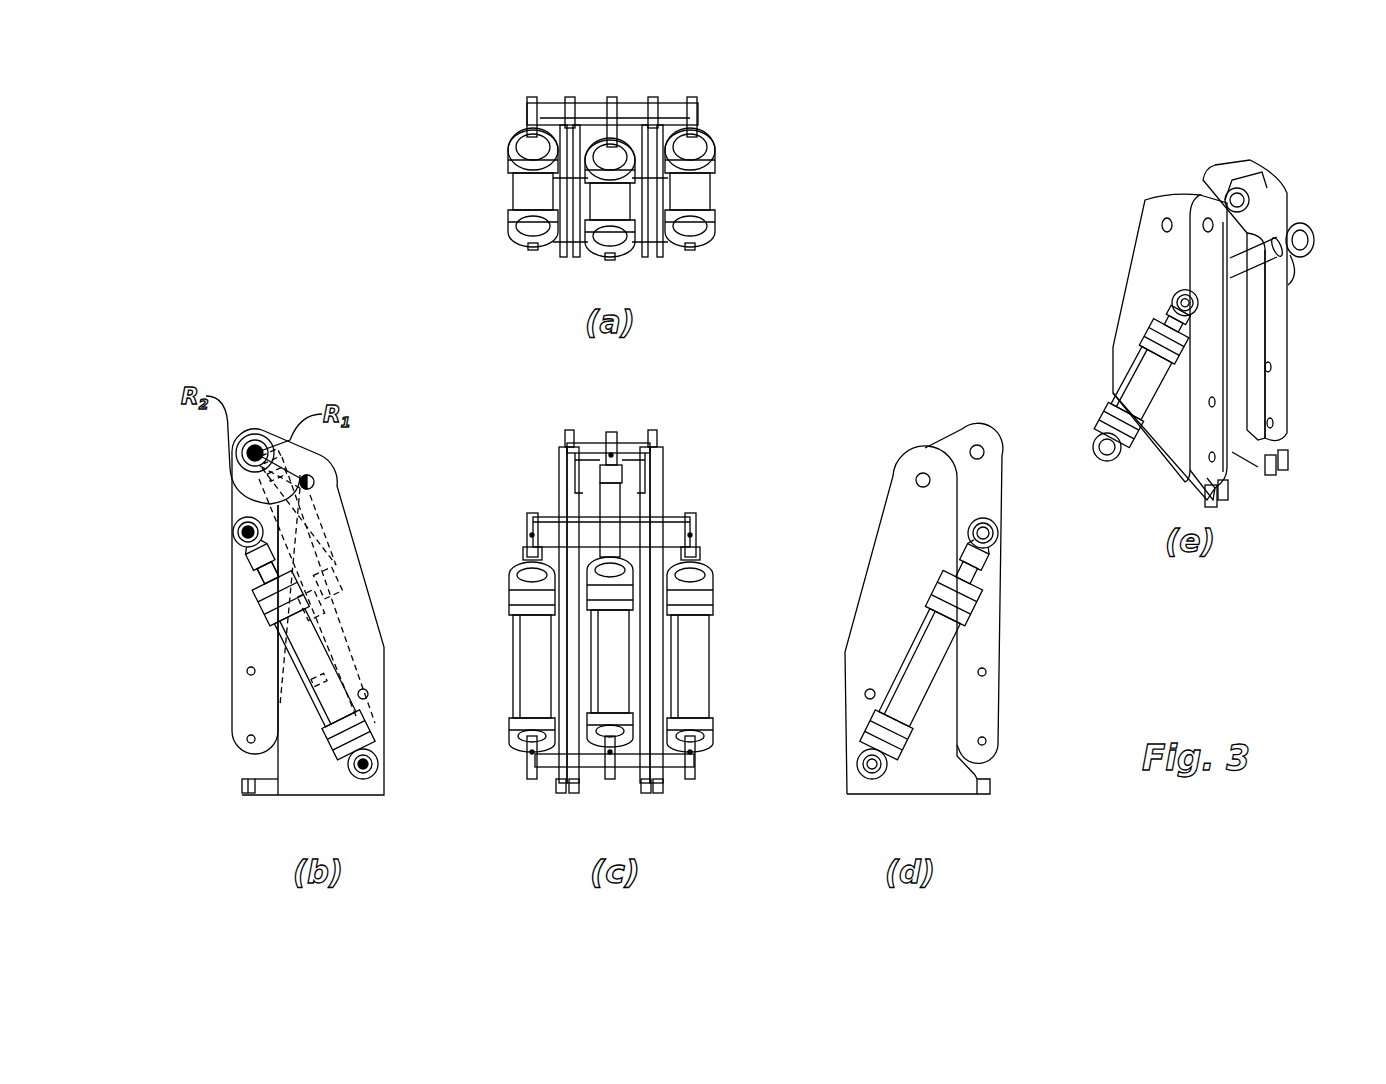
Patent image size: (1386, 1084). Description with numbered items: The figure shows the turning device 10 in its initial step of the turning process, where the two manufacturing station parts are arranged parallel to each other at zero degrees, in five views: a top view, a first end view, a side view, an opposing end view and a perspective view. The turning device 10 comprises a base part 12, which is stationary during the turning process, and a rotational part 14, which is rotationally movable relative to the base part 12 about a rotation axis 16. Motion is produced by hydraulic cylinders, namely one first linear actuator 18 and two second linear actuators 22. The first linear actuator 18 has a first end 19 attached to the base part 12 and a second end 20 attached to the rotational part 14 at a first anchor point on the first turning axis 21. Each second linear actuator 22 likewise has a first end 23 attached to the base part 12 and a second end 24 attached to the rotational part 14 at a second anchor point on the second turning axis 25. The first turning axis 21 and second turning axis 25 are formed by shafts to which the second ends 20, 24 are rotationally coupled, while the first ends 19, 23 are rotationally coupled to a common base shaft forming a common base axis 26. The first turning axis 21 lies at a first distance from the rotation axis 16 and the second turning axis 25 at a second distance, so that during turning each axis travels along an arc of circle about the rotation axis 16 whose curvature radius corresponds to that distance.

The turning device 10 is at (1073, 213).
The base part 12 is at (563, 252).
The rotational part 14 is at (620, 245).
The rotation axis 16 is at (314, 482).
The first linear actuator 18 is at (612, 190).
The first end of the first linear actuator 19 is at (610, 775).
The second end of the first linear actuator 20 is at (604, 432).
The first turning axis 21 is at (262, 440).
The second linear actuators 22 is at (525, 193).
The first end of the second linear actuator 23 is at (520, 758).
The second end of the second linear actuator 24 is at (240, 562).
The second turning axis 25 is at (236, 527).
The common base axis 26 is at (370, 766).